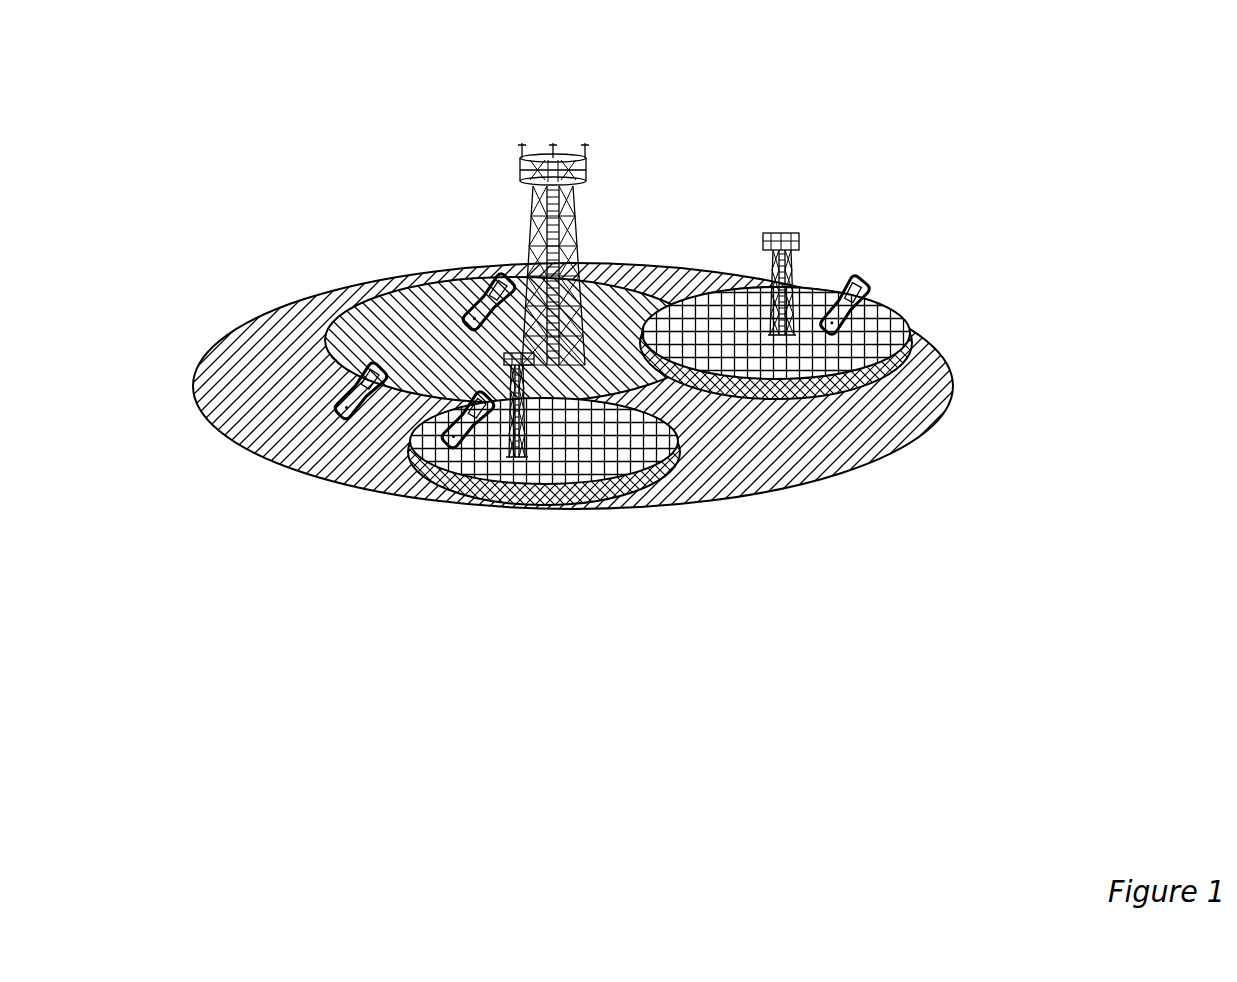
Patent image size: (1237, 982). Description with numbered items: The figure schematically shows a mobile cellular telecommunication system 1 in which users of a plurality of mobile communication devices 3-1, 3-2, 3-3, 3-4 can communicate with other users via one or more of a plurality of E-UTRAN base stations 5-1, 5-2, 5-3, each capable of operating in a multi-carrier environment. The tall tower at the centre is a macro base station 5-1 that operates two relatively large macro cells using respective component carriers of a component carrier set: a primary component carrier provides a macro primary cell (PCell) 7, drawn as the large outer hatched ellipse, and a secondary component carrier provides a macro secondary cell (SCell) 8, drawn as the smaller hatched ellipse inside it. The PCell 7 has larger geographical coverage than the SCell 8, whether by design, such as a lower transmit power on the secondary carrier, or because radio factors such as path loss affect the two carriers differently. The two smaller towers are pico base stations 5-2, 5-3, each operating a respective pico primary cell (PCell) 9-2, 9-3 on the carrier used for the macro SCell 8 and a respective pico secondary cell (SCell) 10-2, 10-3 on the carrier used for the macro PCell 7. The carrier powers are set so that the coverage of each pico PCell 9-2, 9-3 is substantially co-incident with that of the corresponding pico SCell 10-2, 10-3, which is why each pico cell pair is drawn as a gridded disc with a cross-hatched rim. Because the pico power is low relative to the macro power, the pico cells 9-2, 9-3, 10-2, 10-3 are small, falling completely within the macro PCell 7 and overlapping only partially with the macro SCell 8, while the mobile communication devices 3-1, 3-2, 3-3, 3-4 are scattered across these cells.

The mobile telecommunication system 1 is at (812, 163).
The mobile communication device 3-1 is at (500, 285).
The mobile communication device 3-2 is at (360, 372).
The mobile communication device 3-3 is at (866, 287).
The mobile communication device 3-4 is at (470, 445).
The macro base station 5-1 is at (553, 150).
The pico base station 5-2 is at (527, 457).
The pico base station 5-3 is at (773, 242).
The macro primary cell (PCell) 7 is at (263, 353).
The macro secondary cell (SCell) 8 is at (383, 350).
The pico primary cell (PCell) 9-2 is at (645, 405).
The pico primary cell (PCell) 9-3 is at (905, 318).
The pico secondary cell (SCell) 10-2 is at (605, 500).
The pico secondary cell (SCell) 10-3 is at (863, 387).